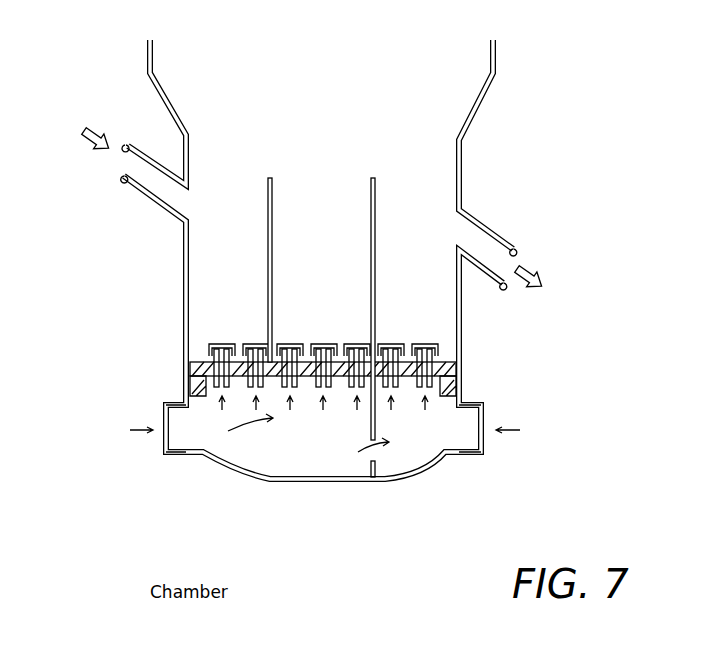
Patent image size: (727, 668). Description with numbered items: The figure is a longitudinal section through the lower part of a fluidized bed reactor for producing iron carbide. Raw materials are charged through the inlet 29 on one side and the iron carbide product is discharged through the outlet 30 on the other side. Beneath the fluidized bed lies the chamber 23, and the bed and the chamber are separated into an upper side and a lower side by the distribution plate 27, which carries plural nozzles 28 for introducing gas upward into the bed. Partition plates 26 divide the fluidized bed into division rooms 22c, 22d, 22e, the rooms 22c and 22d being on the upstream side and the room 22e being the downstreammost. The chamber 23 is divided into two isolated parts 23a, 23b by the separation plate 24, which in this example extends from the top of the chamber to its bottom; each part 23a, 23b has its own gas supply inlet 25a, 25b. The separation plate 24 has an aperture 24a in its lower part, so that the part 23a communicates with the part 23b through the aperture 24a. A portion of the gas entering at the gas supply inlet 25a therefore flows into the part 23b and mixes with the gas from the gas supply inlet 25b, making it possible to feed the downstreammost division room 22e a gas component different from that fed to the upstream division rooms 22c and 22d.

The division room 22c is at (232, 187).
The division room 22d is at (342, 190).
The division room 22e is at (438, 197).
The chamber 23 is at (247, 443).
The part of chamber 23a is at (307, 403).
The part of chamber 23b is at (408, 403).
The separation plate 24 is at (377, 407).
The aperture 24a is at (375, 460).
The gas supply inlet 25a is at (178, 398).
The gas supply inlet 25b is at (478, 400).
The partition plate 26 is at (352, 218).
The distribution plate 27 is at (206, 396).
The nozzles 28 is at (193, 352).
The inlet 29 is at (160, 153).
The outlet 30 is at (490, 230).